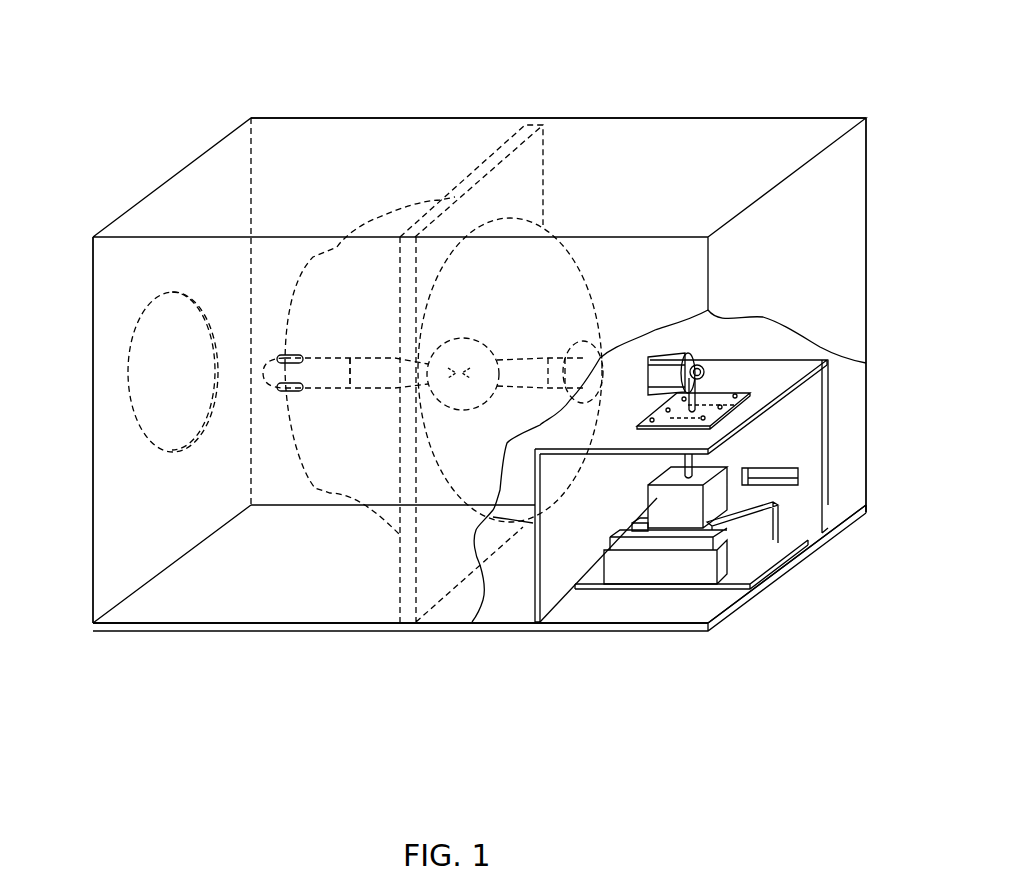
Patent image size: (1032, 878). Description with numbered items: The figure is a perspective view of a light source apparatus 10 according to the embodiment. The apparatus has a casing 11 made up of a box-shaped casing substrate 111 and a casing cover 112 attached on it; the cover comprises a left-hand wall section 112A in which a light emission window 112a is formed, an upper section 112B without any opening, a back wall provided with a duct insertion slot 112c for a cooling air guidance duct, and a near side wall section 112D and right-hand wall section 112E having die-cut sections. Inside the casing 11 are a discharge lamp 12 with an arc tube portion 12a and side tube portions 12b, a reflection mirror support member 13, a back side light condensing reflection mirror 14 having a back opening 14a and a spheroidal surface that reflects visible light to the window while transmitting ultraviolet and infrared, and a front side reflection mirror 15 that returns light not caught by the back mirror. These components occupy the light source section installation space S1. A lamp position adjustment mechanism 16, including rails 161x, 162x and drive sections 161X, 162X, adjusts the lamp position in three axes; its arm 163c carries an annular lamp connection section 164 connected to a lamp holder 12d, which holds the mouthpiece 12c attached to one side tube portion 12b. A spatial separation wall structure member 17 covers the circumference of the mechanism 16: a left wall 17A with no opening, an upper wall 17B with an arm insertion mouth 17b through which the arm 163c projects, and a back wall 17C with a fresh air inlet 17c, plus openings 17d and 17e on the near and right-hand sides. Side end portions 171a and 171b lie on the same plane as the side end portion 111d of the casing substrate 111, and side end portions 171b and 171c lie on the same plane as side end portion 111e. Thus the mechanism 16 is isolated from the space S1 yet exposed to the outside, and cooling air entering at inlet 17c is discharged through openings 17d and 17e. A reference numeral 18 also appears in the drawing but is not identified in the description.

The light source apparatus 10 is at (544, 105).
The casing 11 is at (78, 528).
The discharge lamp 12 is at (475, 329).
The arc tube portion 12a is at (457, 411).
The side tube portion 12b is at (370, 389).
The mouthpiece 12c is at (305, 390).
The lamp holder 12d is at (667, 348).
The reflection mirror support member 13 is at (548, 164).
The back side light condensing reflection mirror 14 is at (595, 276).
The back opening 14a is at (590, 322).
The front side reflection mirror 15 is at (318, 497).
The lamp position adjustment mechanism 16 is at (691, 473).
The spatial separation wall structure member 17 is at (700, 476).
The spatial separation wall 17A is at (548, 583).
The spatial separation wall 17B is at (795, 363).
The spatial separation wall 17C is at (815, 463).
The arm insertion mouth 17b is at (720, 424).
The fresh air inlet 17c is at (790, 477).
The opening 17d is at (578, 518).
The opening 17e is at (792, 447).
The mounting plate 18 is at (745, 401).
The casing substrate 111 is at (298, 625).
The side end portion 111d is at (628, 631).
The side end portion 111e is at (785, 566).
The casing cover 112 is at (93, 431).
The wall section 112A is at (120, 491).
The section 112B is at (655, 130).
The wall section 112D is at (352, 595).
The wall section 112E is at (842, 264).
The light emission window 112a is at (130, 378).
The duct insertion slot 112c is at (325, 157).
The drive section 161X is at (603, 570).
The rail 161x is at (670, 573).
The drive section 162X is at (650, 495).
The rail 162x is at (642, 512).
The arm 163c is at (705, 386).
The annular lamp connection section 164 is at (700, 360).
The side end portion 171a is at (543, 556).
The side end portion 171b is at (603, 447).
The side end portion 171c is at (835, 441).
The light source section installation space S1 is at (674, 265).